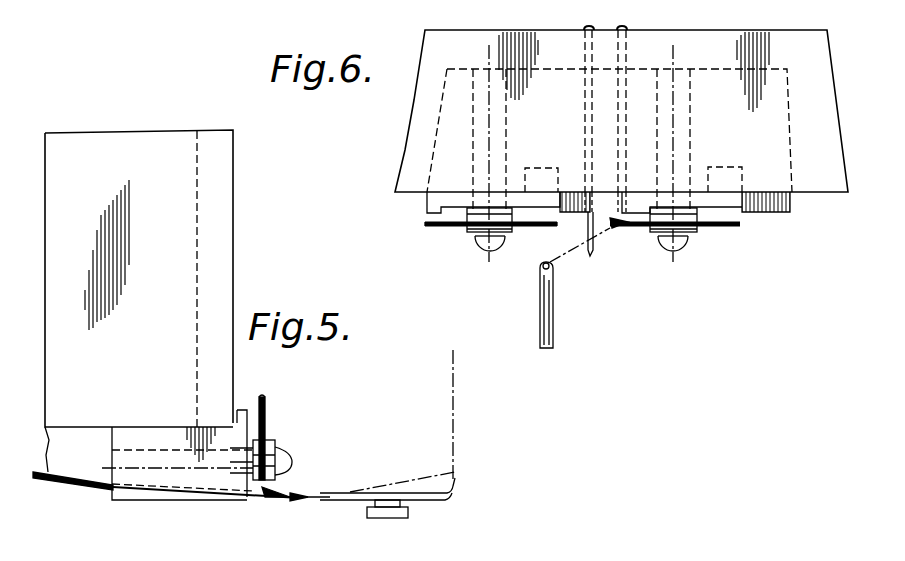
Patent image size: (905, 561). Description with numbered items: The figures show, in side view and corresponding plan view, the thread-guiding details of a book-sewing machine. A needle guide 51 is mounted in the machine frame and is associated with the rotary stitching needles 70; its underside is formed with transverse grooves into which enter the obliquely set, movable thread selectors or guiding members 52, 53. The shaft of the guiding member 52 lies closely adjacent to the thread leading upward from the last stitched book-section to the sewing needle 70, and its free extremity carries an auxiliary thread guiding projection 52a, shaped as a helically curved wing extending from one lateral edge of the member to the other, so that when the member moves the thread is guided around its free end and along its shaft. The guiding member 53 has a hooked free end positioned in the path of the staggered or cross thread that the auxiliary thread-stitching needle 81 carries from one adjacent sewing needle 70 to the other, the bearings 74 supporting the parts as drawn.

In FIG. 6, the needle guide 51 is at (788, 125).
In FIG. 5, the needle guide 51 is at (241, 410).
In FIG. 6, the thread guiding member 52 is at (636, 145).
In FIG. 5, the thread guiding member 52 is at (250, 497).
In FIG. 6, the auxiliary thread guiding projection 52a is at (625, 230).
In FIG. 5, the auxiliary thread guiding projection 52a is at (276, 500).
In FIG. 6, the thread guiding member 53 is at (590, 255).
In FIG. 5, the thread guiding member 53 is at (304, 500).
In FIG. 6, the stitching needle 70 is at (429, 226).
In FIG. 5, the stitching needle 70 is at (266, 398).
In FIG. 6, the bearing 74 is at (505, 150).
In FIG. 5, the bearing 74 is at (294, 466).
In FIG. 6, the auxiliary thread-stitching needle 81 is at (540, 266).
In FIG. 5, the auxiliary thread-stitching needle 81 is at (350, 494).